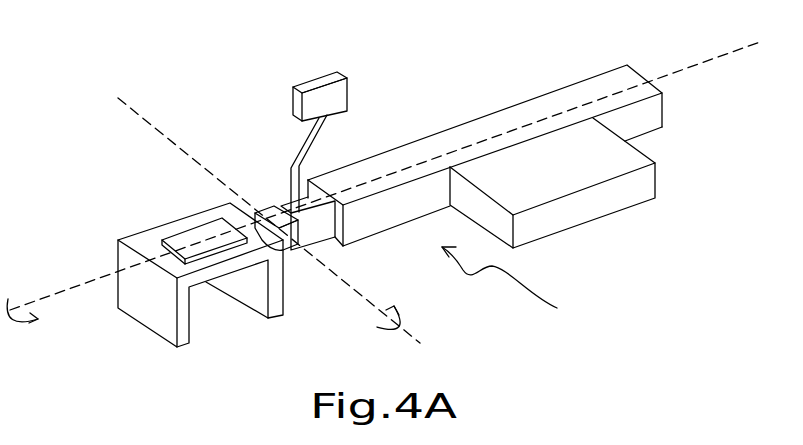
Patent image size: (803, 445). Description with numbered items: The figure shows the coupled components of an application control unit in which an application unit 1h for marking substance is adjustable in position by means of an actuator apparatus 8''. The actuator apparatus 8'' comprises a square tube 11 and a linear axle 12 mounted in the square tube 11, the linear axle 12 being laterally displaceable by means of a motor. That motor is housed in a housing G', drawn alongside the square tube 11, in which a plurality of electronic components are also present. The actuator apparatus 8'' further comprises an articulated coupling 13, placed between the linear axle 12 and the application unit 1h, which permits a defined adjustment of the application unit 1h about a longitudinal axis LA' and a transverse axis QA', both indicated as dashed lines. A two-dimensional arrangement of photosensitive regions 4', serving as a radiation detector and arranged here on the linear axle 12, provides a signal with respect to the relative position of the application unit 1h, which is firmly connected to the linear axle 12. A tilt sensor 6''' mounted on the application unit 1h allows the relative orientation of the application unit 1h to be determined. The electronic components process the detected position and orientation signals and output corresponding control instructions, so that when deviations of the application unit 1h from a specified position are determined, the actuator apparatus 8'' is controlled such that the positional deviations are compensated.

The application unit 1h is at (135, 290).
The tilt sensor 6''' is at (158, 224).
The articulated coupling 13 is at (262, 211).
The linear axle 12 is at (312, 232).
The square tube 11 is at (490, 130).
The housing G' is at (565, 198).
The two-dimensional arrangement of photosensitive regions 4' is at (296, 116).
The actuator apparatus 8'' is at (514, 285).
The transverse axis QA' is at (267, 181).
The longitudinal axis LA' is at (383, 185).